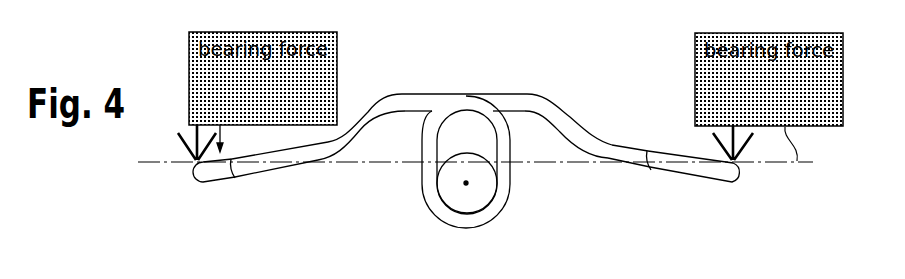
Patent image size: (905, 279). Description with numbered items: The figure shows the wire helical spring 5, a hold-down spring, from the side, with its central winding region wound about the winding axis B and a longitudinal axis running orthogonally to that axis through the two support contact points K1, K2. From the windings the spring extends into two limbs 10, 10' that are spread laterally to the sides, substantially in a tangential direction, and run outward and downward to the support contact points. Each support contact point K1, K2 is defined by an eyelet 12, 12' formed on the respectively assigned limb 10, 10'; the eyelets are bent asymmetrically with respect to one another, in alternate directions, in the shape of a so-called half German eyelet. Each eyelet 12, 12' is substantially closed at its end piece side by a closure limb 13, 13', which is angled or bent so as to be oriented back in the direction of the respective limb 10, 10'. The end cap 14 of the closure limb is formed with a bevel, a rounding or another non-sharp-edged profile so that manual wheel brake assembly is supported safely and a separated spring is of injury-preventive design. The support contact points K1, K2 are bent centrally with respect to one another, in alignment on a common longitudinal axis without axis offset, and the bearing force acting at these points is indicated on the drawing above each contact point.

The wire helical spring 5 is at (466, 138).
The limb 10 is at (560, 96).
The limb 10' is at (375, 96).
The eyelet 12 is at (618, 196).
The eyelet 12' is at (280, 195).
The closure limb 13 is at (693, 200).
The closure limb 13' is at (214, 204).
The end cap 14 is at (710, 197).
The winding axis B is at (469, 183).
The support contact point K1 is at (192, 165).
The support contact point K2 is at (740, 165).